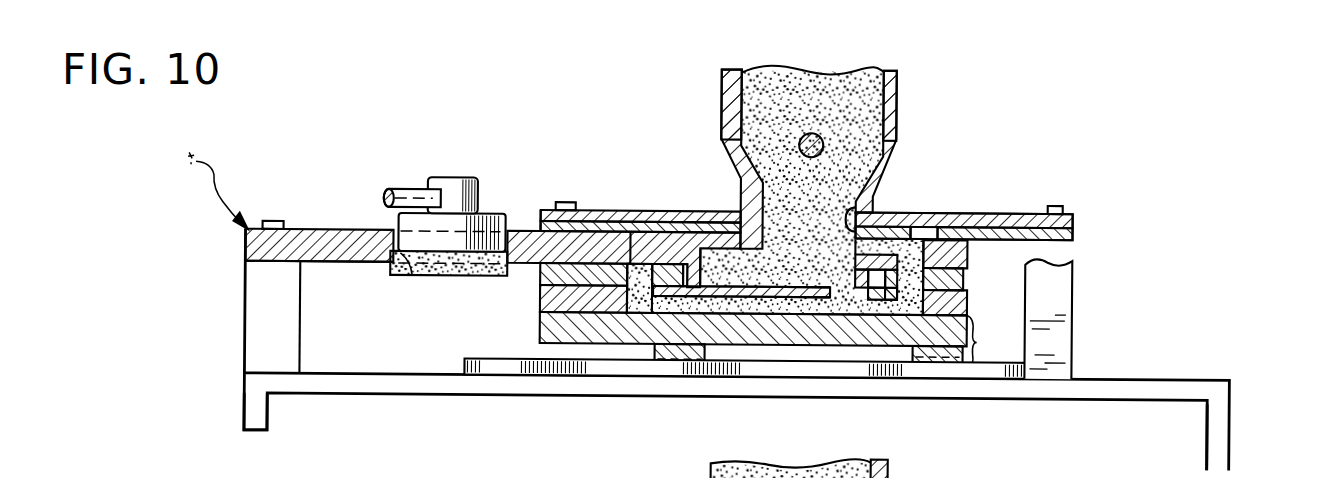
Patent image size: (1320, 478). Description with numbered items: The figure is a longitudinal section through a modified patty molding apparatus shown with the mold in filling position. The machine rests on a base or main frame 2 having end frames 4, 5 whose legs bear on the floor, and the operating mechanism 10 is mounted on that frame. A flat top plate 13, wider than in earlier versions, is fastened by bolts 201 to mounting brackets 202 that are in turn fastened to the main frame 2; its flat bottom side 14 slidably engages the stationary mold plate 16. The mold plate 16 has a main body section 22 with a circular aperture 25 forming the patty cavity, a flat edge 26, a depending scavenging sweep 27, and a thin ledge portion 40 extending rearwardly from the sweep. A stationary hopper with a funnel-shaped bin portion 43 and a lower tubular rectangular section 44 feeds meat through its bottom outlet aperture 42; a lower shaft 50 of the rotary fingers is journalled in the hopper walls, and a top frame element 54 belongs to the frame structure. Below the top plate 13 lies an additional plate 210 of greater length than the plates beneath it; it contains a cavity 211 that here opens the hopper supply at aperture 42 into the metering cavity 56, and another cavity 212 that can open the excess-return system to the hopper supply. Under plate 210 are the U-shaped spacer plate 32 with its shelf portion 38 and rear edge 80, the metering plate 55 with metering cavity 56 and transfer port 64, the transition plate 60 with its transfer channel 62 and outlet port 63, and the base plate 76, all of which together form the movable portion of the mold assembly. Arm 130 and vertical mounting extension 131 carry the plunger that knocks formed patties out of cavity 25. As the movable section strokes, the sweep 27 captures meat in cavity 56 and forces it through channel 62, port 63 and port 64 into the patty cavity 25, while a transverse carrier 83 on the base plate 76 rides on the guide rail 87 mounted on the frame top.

The base or main frame 2 is at (1226, 381).
The end frame 4 is at (1232, 430).
The end frame 5 is at (262, 412).
The operating mechanism 10 is at (1012, 194).
The flat top plate 13 is at (687, 211).
The flat bottom side 14 is at (540, 231).
The stationary mold plate 16 is at (524, 264).
The main plate or body section 22 is at (630, 222).
The circular aperture 25 is at (402, 255).
The flat edge 26 is at (767, 234).
The scavenging sweep 27 is at (702, 281).
The U-shaped spacer plate 32 is at (968, 254).
The shelf portion 38 is at (866, 284).
The thin ledge portion 40 is at (738, 232).
The bottom outlet aperture 42 is at (862, 192).
The funnel-shaped bin portion 43 is at (898, 84).
The tubular rectangular section 44 is at (767, 198).
The lower shaft 50 is at (822, 140).
The top frame element 54 is at (662, 367).
The metering plate 55 is at (966, 275).
The metering cavity 56 is at (793, 300).
The transition plate 60 is at (970, 304).
The transfer channel 62 is at (818, 312).
The outlet port 63 is at (648, 266).
The transfer port 64 is at (632, 270).
The base plate 76 is at (978, 340).
The rear edge 80 is at (855, 247).
The transverse carrier 83 is at (945, 364).
The guide or rail 87 is at (516, 372).
The laterally extending arm 130 is at (402, 190).
The vertical mounting extension 131 is at (458, 179).
The bolt 201 is at (565, 203).
The mounting bracket 202 is at (1068, 326).
The additional plate 210 is at (1075, 222).
The cavity 211 is at (858, 208).
The cavity or aperture 212 is at (928, 230).